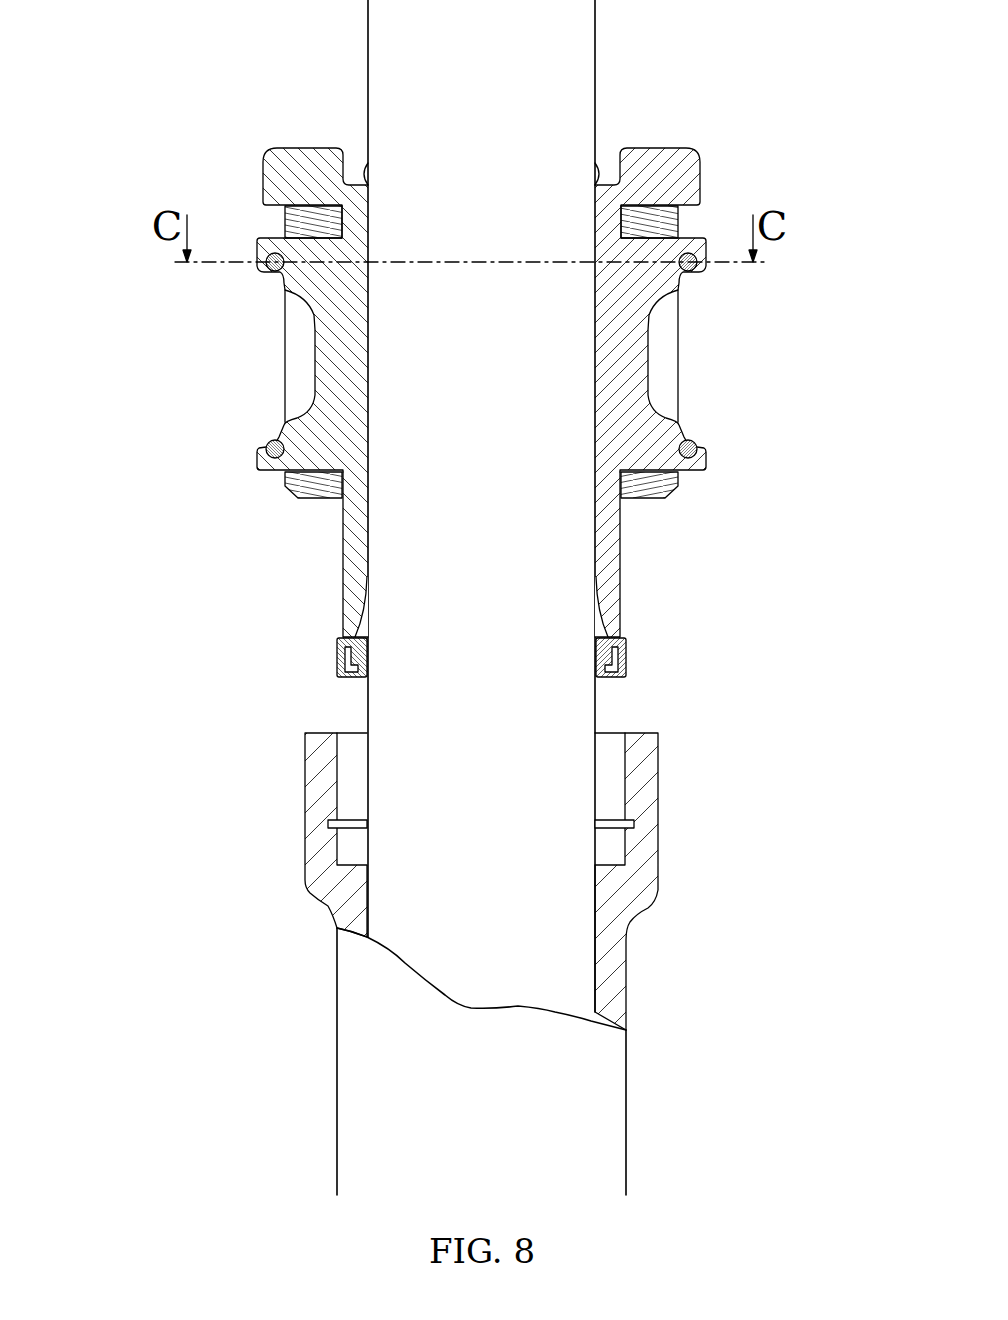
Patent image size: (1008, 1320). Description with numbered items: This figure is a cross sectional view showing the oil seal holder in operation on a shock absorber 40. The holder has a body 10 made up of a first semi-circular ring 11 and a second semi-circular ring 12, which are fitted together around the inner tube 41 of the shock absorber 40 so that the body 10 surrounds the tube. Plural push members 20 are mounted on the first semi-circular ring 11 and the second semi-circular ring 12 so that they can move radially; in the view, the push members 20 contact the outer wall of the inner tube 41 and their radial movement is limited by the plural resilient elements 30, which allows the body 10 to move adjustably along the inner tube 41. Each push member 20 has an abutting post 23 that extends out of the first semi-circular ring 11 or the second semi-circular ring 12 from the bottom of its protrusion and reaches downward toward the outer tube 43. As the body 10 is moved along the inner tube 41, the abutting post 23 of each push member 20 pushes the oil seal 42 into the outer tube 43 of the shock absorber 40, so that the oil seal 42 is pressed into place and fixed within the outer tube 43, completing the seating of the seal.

The body 10 is at (195, 344).
The first semi-circular ring 11 is at (297, 230).
The second semi-circular ring 12 is at (670, 223).
The push member 20 is at (300, 157).
The abutting post 23 is at (352, 560).
The resilient element 30 is at (271, 270).
The shock absorber 40 is at (722, 925).
The inner tube 41 is at (395, 76).
The oil seal 42 is at (340, 654).
The outer tube 43 is at (320, 833).